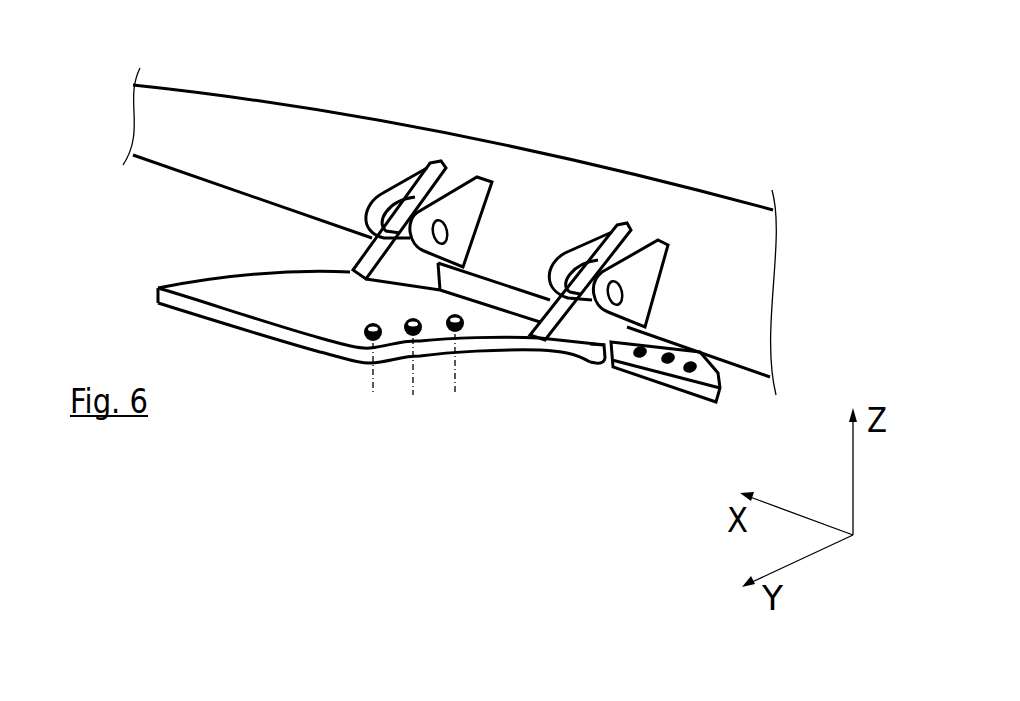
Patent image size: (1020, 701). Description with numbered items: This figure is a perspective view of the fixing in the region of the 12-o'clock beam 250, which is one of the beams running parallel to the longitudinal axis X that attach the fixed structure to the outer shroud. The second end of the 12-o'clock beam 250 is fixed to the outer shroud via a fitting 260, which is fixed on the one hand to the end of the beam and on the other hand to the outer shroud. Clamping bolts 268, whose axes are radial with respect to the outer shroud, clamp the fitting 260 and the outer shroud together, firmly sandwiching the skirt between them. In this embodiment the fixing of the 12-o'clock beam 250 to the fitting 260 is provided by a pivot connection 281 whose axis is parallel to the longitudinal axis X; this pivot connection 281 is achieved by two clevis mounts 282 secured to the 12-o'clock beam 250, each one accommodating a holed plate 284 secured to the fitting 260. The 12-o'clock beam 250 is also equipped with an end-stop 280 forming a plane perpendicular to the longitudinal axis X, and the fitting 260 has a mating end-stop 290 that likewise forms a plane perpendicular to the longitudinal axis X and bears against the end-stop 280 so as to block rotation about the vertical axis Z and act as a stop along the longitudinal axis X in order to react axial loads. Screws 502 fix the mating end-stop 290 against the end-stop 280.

The 12-o'clock beam 250 is at (267, 122).
The pivot connection 281 is at (512, 90).
The clevis mounts 282 is at (405, 190).
The holed plate 284 is at (368, 248).
The fitting 260 is at (207, 293).
The clamping bolts 268 is at (365, 337).
The mating end-stop 290 is at (606, 368).
The end-stop 280 is at (705, 373).
The screws 502 is at (675, 352).